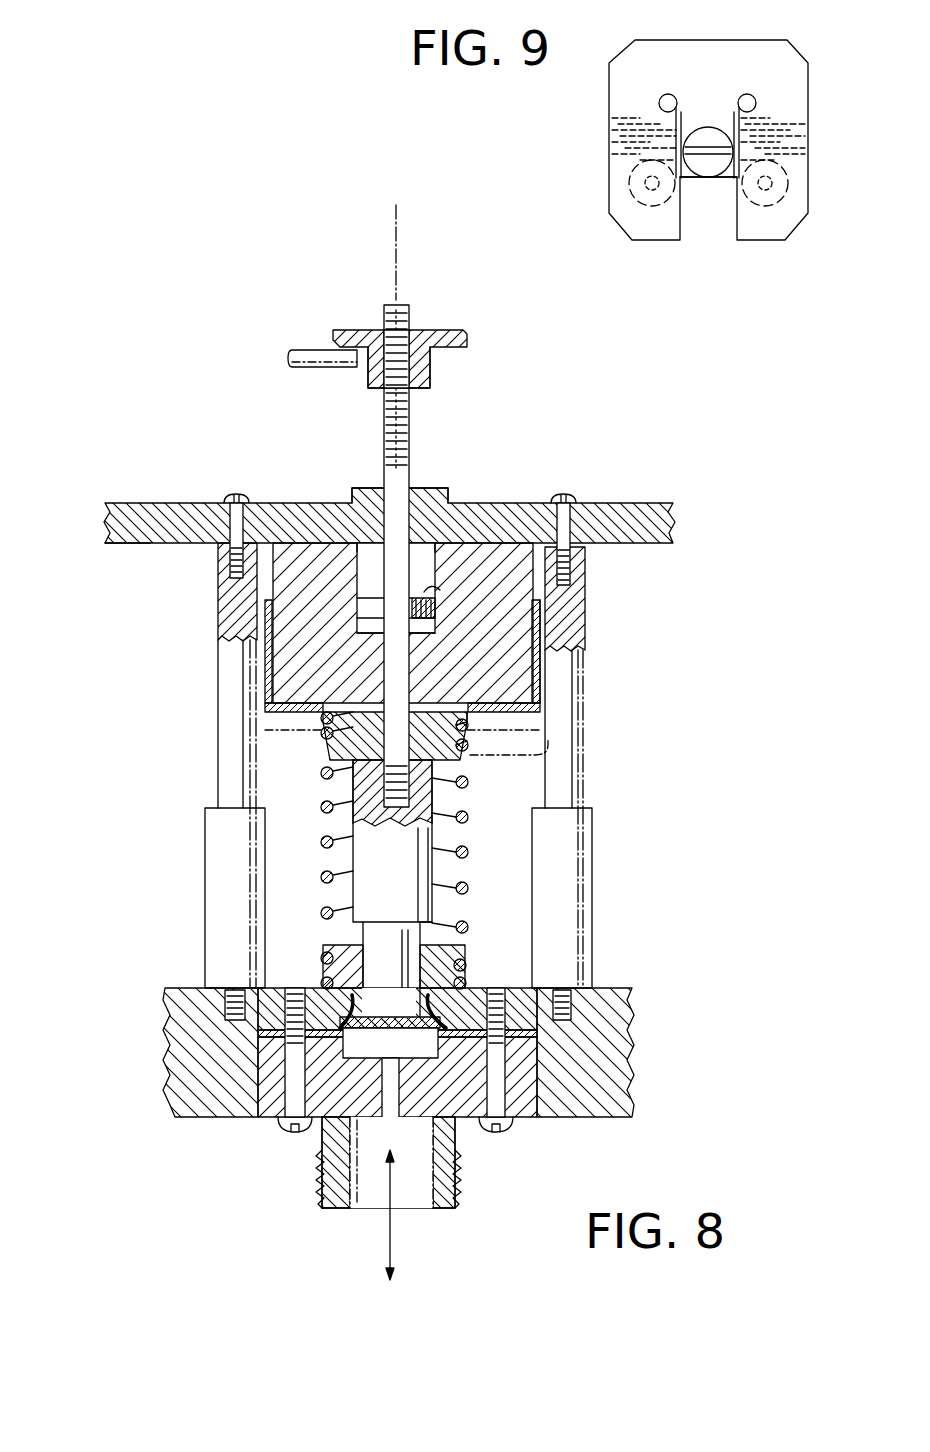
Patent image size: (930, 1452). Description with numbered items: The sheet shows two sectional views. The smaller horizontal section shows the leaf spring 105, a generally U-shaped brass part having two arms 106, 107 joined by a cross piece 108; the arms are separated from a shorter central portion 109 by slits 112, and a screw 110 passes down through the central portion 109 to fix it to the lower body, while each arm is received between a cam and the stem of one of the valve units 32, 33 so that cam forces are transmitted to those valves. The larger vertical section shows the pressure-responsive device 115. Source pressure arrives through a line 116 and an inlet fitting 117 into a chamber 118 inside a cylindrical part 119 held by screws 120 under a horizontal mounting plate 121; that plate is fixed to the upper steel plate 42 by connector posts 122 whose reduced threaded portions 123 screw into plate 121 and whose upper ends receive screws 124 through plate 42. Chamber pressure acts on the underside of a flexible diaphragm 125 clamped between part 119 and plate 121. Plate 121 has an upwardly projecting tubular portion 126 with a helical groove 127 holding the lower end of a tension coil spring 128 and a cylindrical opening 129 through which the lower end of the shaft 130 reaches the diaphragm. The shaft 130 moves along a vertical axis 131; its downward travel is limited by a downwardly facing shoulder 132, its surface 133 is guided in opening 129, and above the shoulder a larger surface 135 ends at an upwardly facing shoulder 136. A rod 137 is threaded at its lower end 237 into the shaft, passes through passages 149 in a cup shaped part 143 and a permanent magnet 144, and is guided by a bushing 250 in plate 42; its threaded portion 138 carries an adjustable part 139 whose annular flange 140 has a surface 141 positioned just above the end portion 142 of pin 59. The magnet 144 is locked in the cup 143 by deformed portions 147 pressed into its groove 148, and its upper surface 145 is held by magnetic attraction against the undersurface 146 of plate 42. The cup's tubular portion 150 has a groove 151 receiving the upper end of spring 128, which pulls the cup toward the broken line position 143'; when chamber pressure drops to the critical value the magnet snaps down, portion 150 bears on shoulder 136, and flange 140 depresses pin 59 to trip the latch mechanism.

In FIG. 8, the upper plate 42 is at (150, 503).
In FIG. 8, the undersurface of plate 146 is at (150, 545).
In FIG. 8, the upper horizontal surface of magnet 145 is at (315, 499).
In FIG. 8, the permanent magnet 144 is at (300, 620).
In FIG. 8, the groove 148 is at (545, 590).
In FIG. 8, the localized portions of cup side wall 147 is at (520, 632).
In FIG. 8, the vertical rod 137 is at (385, 683).
In FIG. 8, the passages 149 is at (540, 682).
In FIG. 8, the cup shaped part 143 is at (598, 659).
In FIG. 8, the broken line position of cup shaped part 143' is at (584, 759).
In FIG. 8, the connector posts 122 is at (212, 903).
In FIG. 8, the tubular portion 150 is at (330, 725).
In FIG. 8, the helically curved groove 151 is at (468, 746).
In FIG. 8, the shaft 130 is at (365, 860).
In FIG. 8, the lower end of rod 237 is at (355, 785).
In FIG. 8, the external surface of shaft 135 is at (432, 835).
In FIG. 8, the upwardly facing shoulder 136 is at (340, 747).
In FIG. 8, the coil spring 128 is at (463, 851).
In FIG. 8, the outer cylindrical surface of shaft 133 is at (430, 930).
In FIG. 8, the downwardly facing shoulder 132 is at (388, 928).
In FIG. 8, the helically extending groove 127 is at (325, 958).
In FIG. 8, the opening 129 is at (368, 968).
In FIG. 8, the tubular portion of mounting plate 126 is at (460, 955).
In FIG. 8, the mounting plate 121 is at (205, 1108).
In FIG. 8, the reduced diameter threaded portions 123 is at (228, 1005).
In FIG. 8, the flexible circular diaphragm 125 is at (555, 1038).
In FIG. 8, the chamber 118 is at (393, 1026).
In FIG. 8, the cylindrical part 119 is at (332, 1100).
In FIG. 8, the screws 120 is at (500, 1125).
In FIG. 8, the inlet fitting 117 is at (457, 1160).
In FIG. 8, the line 116 is at (392, 1234).
In FIG. 8, the threaded portion 138 is at (392, 318).
In FIG. 8, the vertical axis 131 is at (400, 248).
In FIG. 8, the annular flange 140 is at (330, 336).
In FIG. 8, the downwardly facing horizontal surface 141 is at (452, 350).
In FIG. 8, the end portion of pin 142 is at (357, 368).
In FIG. 8, the adjustable part 139 is at (478, 343).
In FIG. 8, the horizontal pin 59 is at (292, 369).
In FIG. 8, the bushing 250 is at (443, 492).
In FIG. 8, the screws 124 is at (235, 496).
In FIG. 8, the device 115 is at (692, 583).
In FIG. 9, the cross piece 108 is at (716, 55).
In FIG. 9, the leaf spring 105 is at (600, 137).
In FIG. 9, the screw 110 is at (706, 136).
In FIG. 9, the slits 112 is at (680, 150).
In FIG. 9, the arm 106 is at (612, 206).
In FIG. 9, the arm 107 is at (800, 212).
In FIG. 9, the central portion 109 is at (731, 176).
In FIG. 9, the valve unit 32 is at (650, 207).
In FIG. 9, the valve unit 33 is at (763, 207).